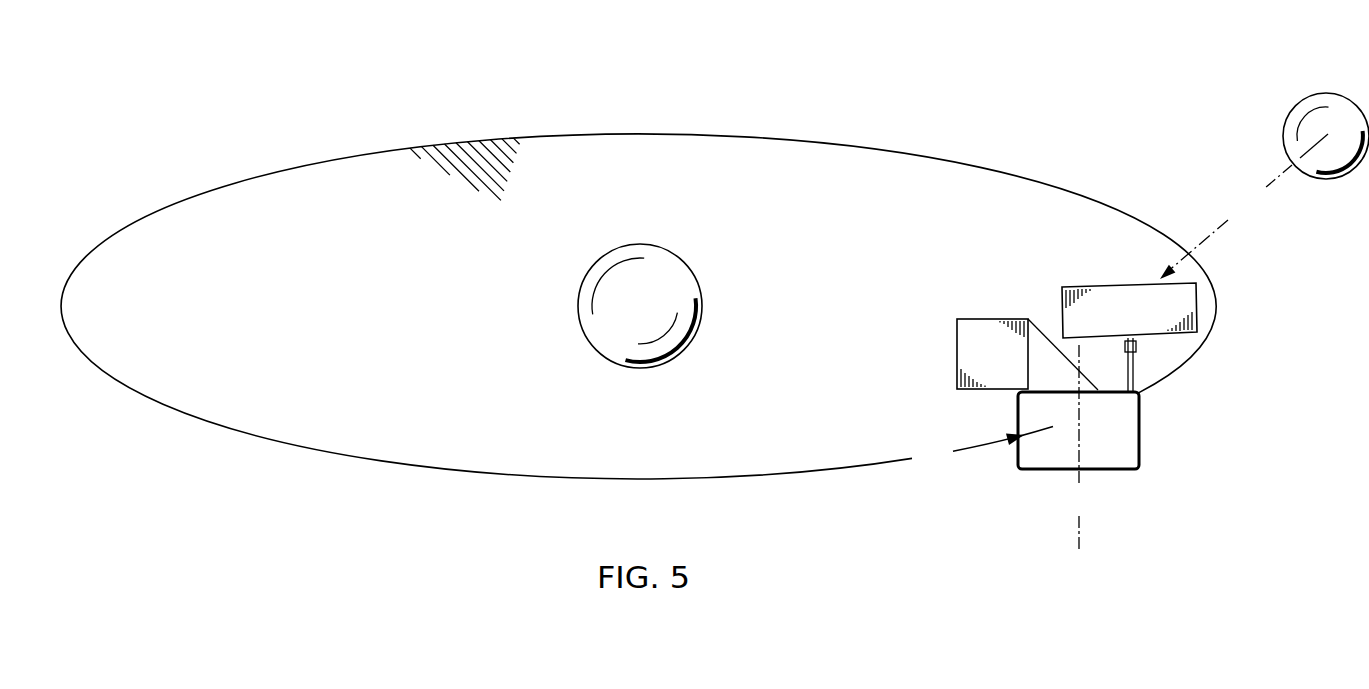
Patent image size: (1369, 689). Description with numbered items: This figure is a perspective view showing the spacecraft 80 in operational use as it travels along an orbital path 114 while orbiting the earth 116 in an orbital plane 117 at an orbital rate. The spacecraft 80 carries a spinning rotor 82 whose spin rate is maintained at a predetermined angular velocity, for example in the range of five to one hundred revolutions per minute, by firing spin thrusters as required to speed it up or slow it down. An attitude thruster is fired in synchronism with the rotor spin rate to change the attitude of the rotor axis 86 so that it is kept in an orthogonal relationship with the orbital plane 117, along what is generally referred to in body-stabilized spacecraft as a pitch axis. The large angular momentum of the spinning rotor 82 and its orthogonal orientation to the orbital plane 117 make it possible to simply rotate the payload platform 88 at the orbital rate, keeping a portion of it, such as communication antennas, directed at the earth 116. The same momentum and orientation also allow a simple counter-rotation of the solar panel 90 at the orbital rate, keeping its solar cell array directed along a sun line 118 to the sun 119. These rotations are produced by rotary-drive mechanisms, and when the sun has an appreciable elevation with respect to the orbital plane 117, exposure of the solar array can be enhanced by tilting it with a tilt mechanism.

The spacecraft 80 is at (988, 309).
The rotor 82 is at (1130, 425).
The rotor axis 86 is at (1078, 447).
The payload platform 88 is at (957, 353).
The solar panel 90 is at (1198, 328).
The orbital path 114 is at (638, 306).
The earth 116 is at (618, 246).
The orbital plane 117 is at (462, 150).
The sun line 118 is at (1244, 206).
The sun 119 is at (1311, 92).